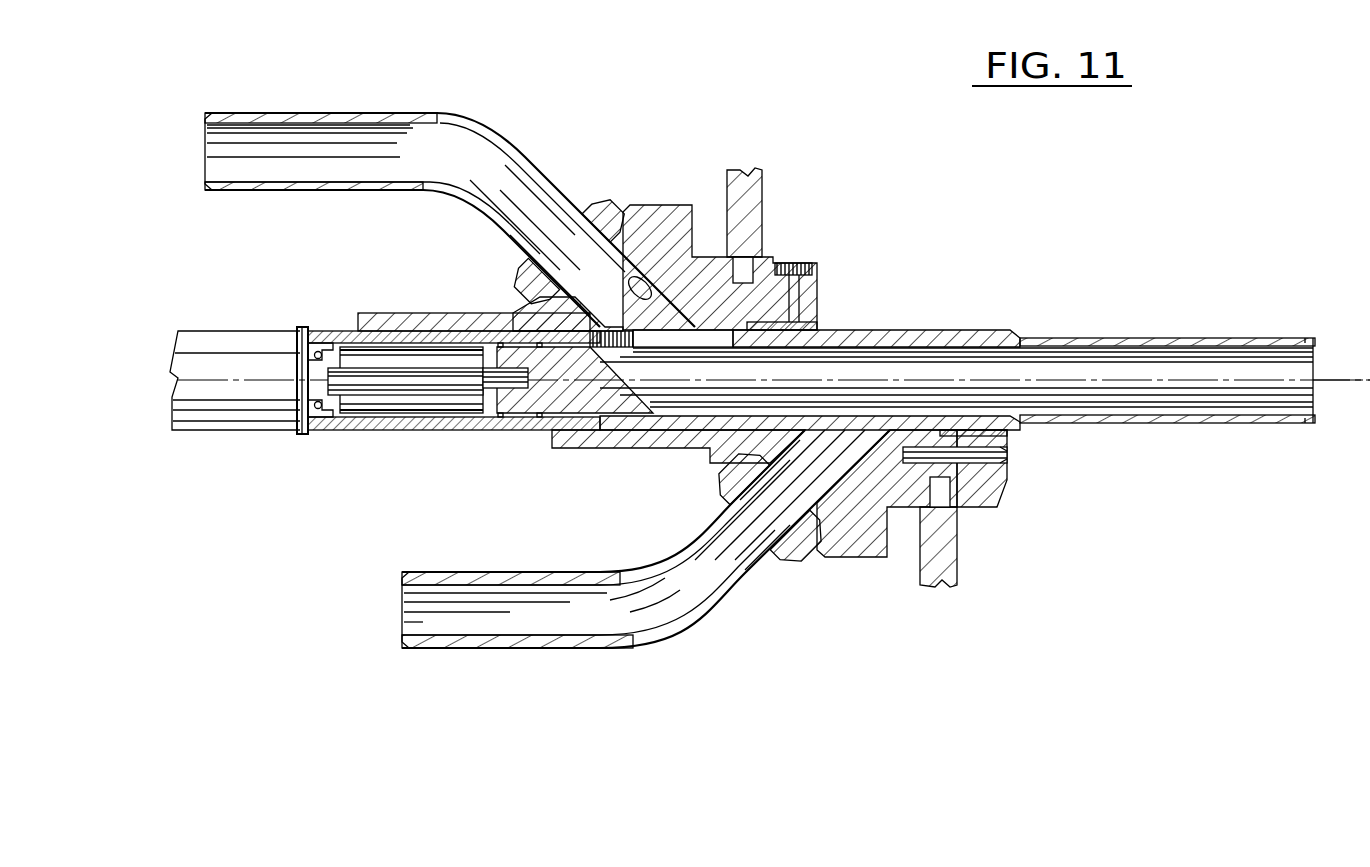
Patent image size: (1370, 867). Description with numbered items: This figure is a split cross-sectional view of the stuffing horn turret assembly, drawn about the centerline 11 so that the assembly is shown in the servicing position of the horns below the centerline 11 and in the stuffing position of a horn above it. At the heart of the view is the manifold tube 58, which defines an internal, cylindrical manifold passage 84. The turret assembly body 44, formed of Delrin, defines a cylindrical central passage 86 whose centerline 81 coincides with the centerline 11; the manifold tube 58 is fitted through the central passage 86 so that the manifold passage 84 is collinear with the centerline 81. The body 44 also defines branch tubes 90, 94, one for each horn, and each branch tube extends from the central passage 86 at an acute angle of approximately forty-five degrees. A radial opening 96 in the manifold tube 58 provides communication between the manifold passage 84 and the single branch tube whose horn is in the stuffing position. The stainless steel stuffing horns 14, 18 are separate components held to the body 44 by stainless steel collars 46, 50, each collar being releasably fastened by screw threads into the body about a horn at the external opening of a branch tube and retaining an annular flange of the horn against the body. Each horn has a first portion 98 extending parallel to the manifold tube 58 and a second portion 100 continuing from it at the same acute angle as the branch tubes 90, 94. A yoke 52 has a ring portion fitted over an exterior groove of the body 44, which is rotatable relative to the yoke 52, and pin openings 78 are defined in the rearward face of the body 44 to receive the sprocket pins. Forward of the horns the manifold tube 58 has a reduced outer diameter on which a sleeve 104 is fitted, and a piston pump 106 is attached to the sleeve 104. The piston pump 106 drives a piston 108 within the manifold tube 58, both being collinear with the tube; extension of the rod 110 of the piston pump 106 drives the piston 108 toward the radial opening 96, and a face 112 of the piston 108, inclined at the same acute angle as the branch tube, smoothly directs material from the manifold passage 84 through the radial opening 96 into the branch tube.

The centerline 11 is at (178, 380).
The stuffing horn 14 is at (366, 113).
The stuffing horn 18 is at (688, 630).
The turret assembly body 44 is at (818, 286).
The collar 46 is at (598, 200).
The collar 50 is at (813, 550).
The yoke 52 is at (752, 218).
The manifold tube 58 is at (1048, 340).
The pin openings 78 is at (1010, 456).
The centerline 81 is at (1323, 382).
The manifold passage 84 is at (1225, 346).
The central passage 86 is at (727, 350).
The branch tube 90 is at (672, 306).
The branch tube 94 is at (790, 470).
The radial opening 96 is at (614, 331).
The first portion 98 is at (336, 192).
The second portion 100 is at (495, 233).
The sleeve 104 is at (342, 432).
The piston pump 106 is at (243, 416).
The piston 108 is at (480, 414).
The rod 110 is at (420, 384).
The face 112 is at (662, 394).